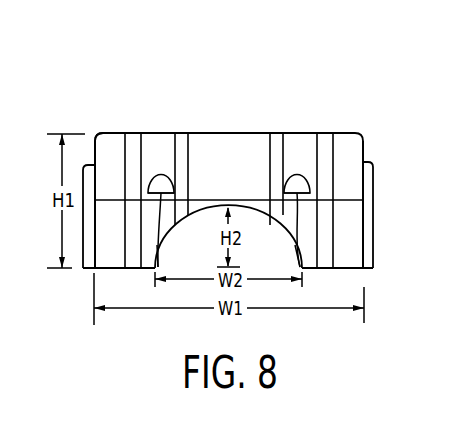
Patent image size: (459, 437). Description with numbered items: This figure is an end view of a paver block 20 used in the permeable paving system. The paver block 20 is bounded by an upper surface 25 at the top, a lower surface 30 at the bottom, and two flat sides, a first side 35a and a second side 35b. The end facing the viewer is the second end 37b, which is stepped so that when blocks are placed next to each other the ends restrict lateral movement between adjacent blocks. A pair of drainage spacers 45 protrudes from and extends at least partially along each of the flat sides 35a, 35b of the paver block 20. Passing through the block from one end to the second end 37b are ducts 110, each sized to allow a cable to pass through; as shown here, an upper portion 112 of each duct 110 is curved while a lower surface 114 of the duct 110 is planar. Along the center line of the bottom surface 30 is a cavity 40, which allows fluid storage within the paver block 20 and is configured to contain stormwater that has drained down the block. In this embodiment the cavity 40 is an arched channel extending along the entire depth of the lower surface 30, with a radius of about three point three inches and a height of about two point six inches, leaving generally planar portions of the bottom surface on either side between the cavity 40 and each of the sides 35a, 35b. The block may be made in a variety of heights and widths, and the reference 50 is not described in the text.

The paver block 20 is at (370, 100).
The upper surface 25 is at (160, 174).
The lower surface 30 is at (353, 268).
The first side 35a is at (93, 160).
The second side 35b is at (366, 152).
The second end 37b is at (247, 150).
The cavity 40 is at (202, 208).
The drainage spacers 45 is at (84, 261).
The front face 50 is at (93, 154).
The ducts 110 is at (167, 176).
The upper portion 112 is at (152, 179).
The lower surface 114 is at (160, 247).